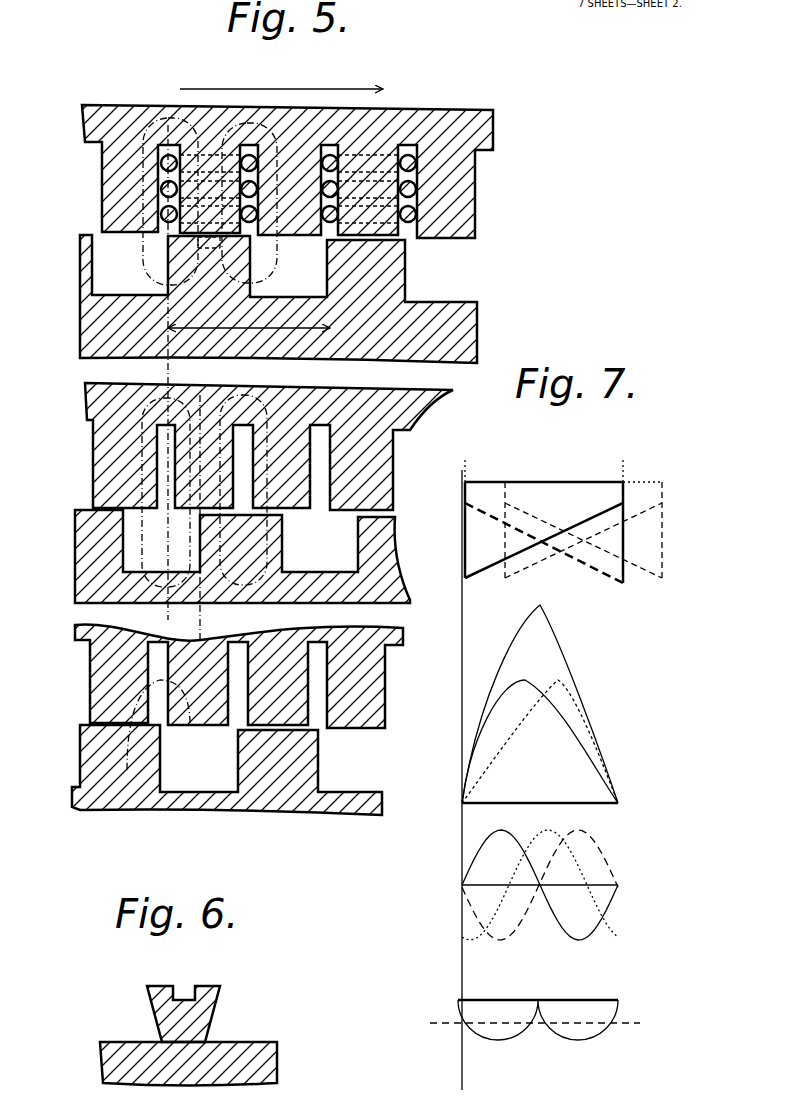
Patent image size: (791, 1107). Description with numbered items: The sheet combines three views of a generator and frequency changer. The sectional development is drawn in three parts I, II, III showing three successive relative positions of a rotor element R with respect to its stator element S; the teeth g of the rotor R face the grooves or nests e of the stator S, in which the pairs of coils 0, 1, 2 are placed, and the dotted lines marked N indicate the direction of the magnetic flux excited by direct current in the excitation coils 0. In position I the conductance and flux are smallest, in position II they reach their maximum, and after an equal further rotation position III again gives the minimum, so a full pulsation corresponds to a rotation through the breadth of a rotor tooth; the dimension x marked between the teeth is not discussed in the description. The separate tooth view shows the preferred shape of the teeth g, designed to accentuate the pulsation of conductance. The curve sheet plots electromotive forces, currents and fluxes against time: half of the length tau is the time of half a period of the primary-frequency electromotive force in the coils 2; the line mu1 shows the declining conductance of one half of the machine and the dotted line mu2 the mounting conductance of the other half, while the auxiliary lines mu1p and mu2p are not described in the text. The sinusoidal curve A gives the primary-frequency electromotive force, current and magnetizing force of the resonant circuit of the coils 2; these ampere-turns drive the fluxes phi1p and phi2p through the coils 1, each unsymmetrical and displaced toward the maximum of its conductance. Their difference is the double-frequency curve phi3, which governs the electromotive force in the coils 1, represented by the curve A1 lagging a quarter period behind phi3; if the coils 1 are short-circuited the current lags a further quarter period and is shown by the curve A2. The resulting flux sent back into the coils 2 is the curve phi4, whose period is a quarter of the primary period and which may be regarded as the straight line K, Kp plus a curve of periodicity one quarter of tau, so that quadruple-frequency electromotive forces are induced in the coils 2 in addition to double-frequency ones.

In FIG. 5, the stator S is at (458, 110).
In FIG. 5, the rotor part R is at (462, 333).
In FIG. 5, the magnetic flux direction (north pole) N is at (202, 444).
In FIG. 5, the excitation coils 0 is at (416, 214).
In FIG. 5, the coils of double frequency 1 is at (416, 189).
In FIG. 5, the coils of primary frequency 2 is at (416, 163).
In FIG. 5, the grooves or nests e is at (278, 578).
In FIG. 5, the rotor teeth g is at (270, 552).
In FIG. 6, the rotor teeth g is at (208, 1006).
In FIG. 5, the tooth pitch dimension x is at (238, 835).
In FIG. 5, the first position I is at (513, 276).
In FIG. 5, the second position II is at (427, 533).
In FIG. 5, the third position III is at (419, 755).
In FIG. 7, the period of primary frequency tau is at (465, 467).
In FIG. 7, the magnetic conductance line of half A mu1 is at (470, 590).
In FIG. 7, the permeance curve μ'1 mu1p is at (530, 572).
In FIG. 7, the magnetic conductance line of half B mu2 is at (600, 576).
In FIG. 7, the permeance curve μ'2 mu2p is at (645, 578).
In FIG. 7, the primary-frequency electromotive force curve A is at (583, 673).
In FIG. 7, the alternating magnetic flux from coil 2 phi1p is at (508, 688).
In FIG. 7, the alternating magnetic flux from coil 2' phi2p is at (558, 680).
In FIG. 7, the flux difference curve phi3 is at (472, 850).
In FIG. 7, the double-frequency electromotive force curve A1 is at (577, 872).
In FIG. 7, the short-circuit current curve A2 is at (598, 840).
In FIG. 7, the straight line component K is at (529, 1011).
In FIG. 7, the straight line component end Kp is at (638, 1013).
In FIG. 7, the resulting flux curve phi4 is at (510, 1033).